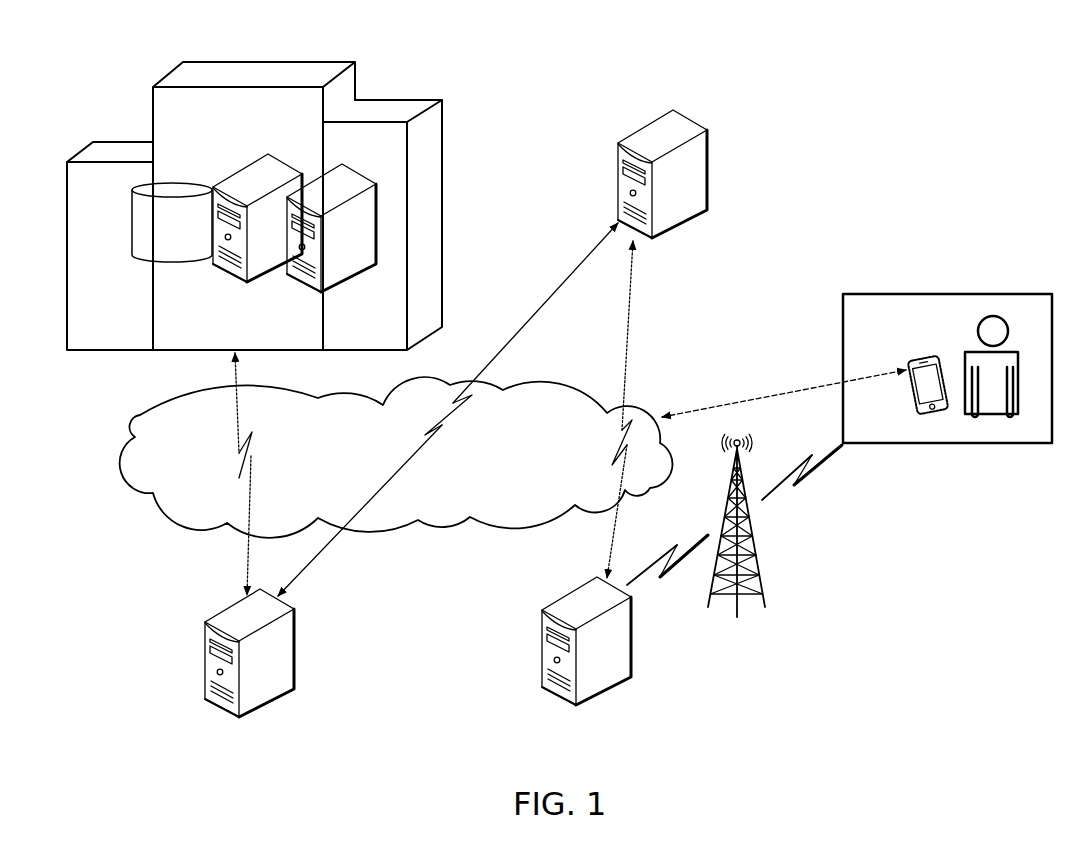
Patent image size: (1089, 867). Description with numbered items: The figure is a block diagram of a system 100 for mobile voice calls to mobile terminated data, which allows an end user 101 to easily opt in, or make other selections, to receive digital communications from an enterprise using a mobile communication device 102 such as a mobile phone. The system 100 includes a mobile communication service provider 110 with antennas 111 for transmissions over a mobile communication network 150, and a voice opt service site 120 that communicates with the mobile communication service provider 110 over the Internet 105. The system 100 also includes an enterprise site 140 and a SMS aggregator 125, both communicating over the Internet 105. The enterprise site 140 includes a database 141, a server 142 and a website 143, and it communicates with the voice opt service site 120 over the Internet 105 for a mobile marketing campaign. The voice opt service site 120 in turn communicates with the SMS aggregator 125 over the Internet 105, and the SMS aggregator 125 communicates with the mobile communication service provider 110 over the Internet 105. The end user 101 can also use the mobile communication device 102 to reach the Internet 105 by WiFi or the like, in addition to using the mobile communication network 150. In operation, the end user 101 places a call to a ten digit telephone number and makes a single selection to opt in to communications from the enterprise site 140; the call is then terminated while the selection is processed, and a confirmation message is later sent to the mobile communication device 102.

The system 100 is at (840, 84).
The end user 101 is at (975, 351).
The mobile communication device 102 is at (915, 355).
The Internet 105 is at (531, 378).
The mobile communication service provider 110 is at (543, 690).
The antennas 111 is at (762, 577).
The voice opt service site 120 is at (208, 703).
The SMS aggregator 125 is at (708, 160).
The enterprise site 140 is at (228, 50).
The database 141 is at (142, 254).
The server 142 is at (235, 283).
The website 143 is at (311, 290).
The mobile communication network 150 is at (814, 480).